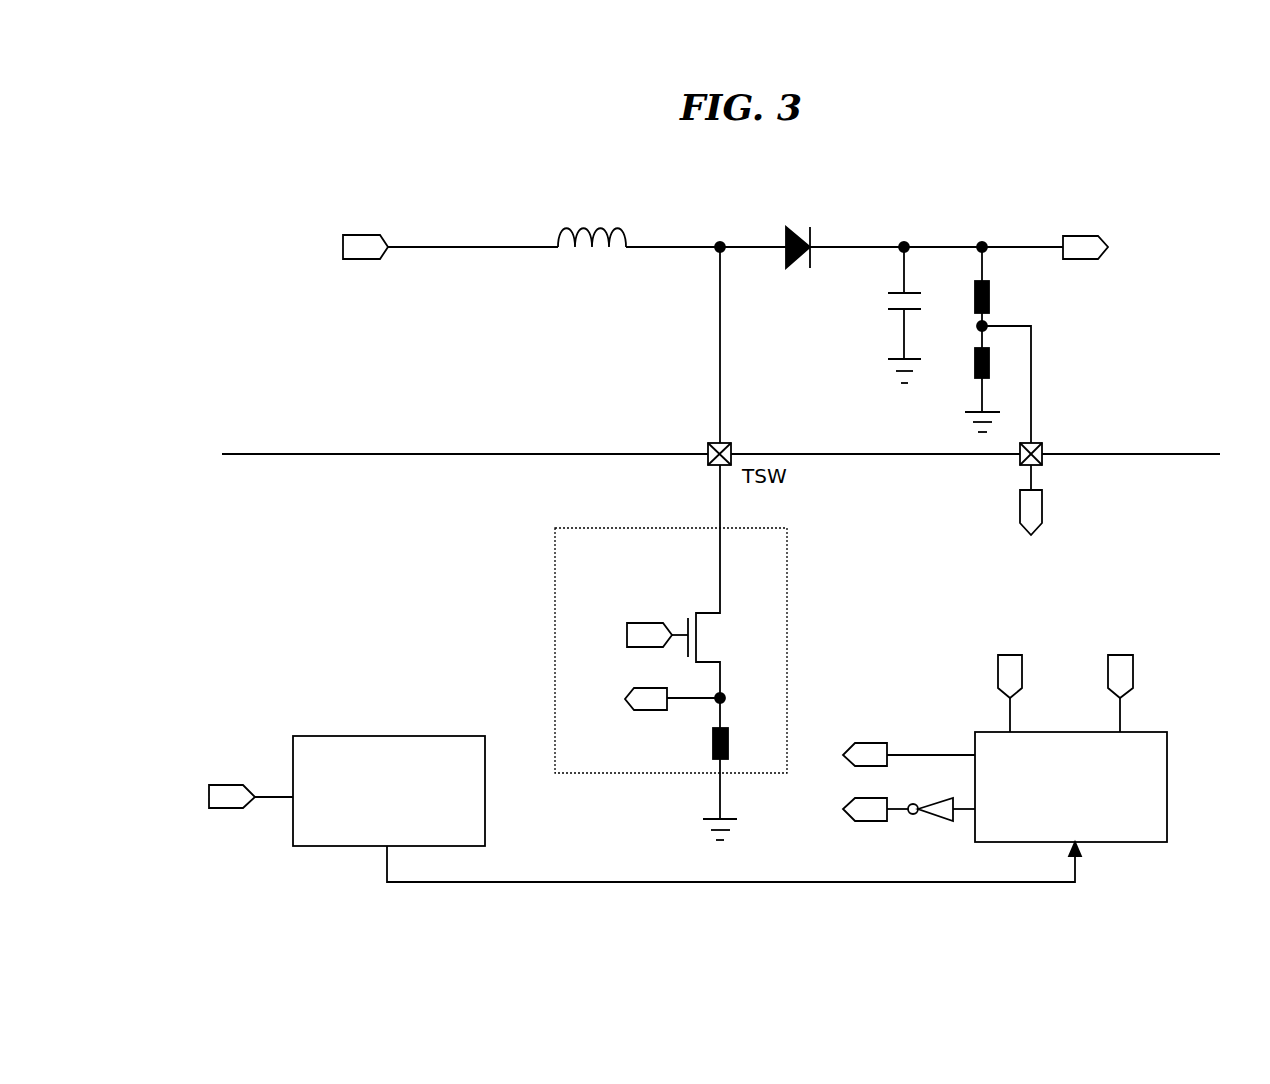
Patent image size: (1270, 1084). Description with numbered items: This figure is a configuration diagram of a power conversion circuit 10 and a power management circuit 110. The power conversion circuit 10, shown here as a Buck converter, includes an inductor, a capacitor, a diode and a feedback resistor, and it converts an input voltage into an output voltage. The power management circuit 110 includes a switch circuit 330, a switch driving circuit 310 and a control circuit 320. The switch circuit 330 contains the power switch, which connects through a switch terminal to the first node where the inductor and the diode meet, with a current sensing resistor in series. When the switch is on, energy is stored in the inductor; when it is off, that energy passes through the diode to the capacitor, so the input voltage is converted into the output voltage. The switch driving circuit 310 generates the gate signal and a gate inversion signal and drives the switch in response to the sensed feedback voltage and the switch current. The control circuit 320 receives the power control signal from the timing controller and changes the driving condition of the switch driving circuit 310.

The power conversion circuit 10 is at (255, 203).
The power management circuit 110 is at (263, 570).
The switch driving circuit 310 is at (1167, 801).
The control circuit 320 is at (330, 846).
The switch circuit 330 is at (627, 773).